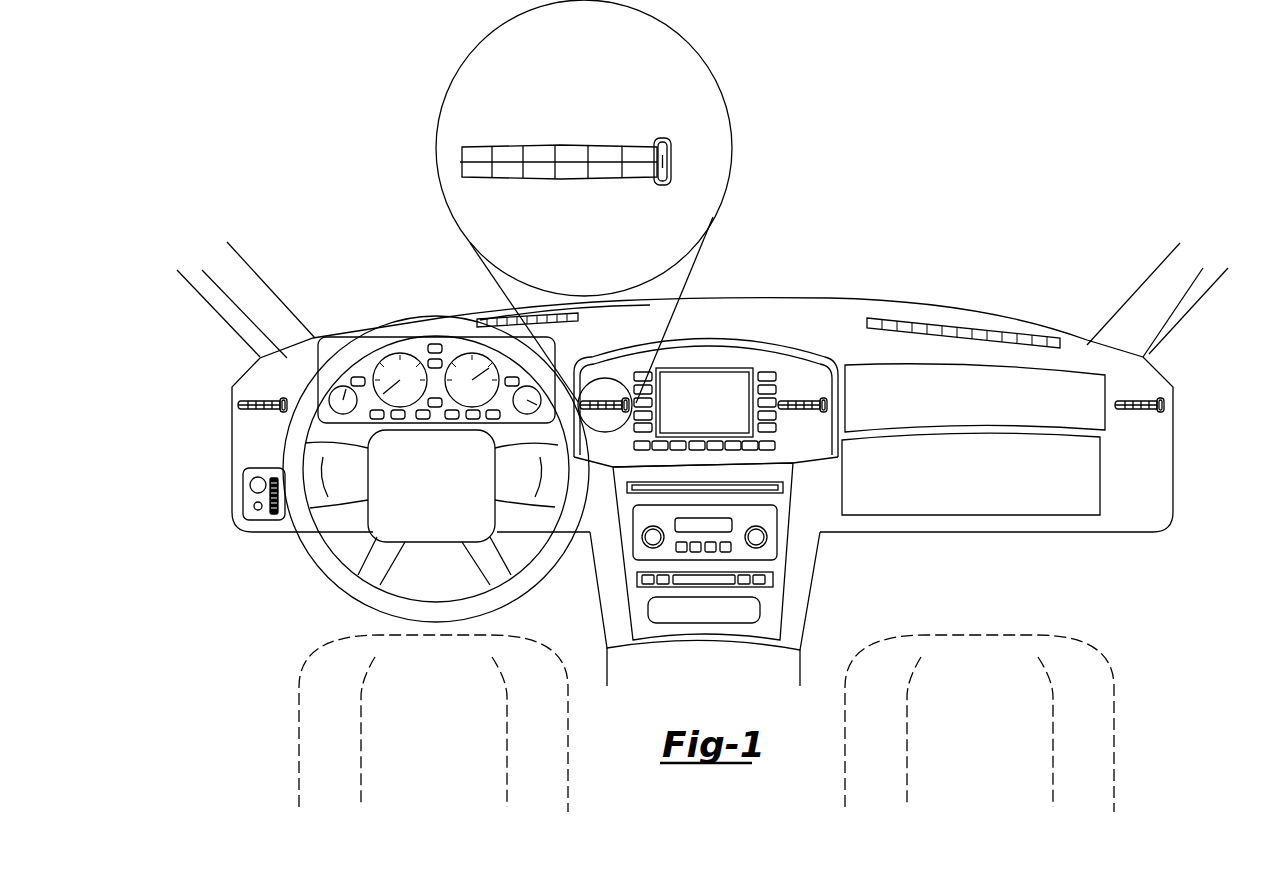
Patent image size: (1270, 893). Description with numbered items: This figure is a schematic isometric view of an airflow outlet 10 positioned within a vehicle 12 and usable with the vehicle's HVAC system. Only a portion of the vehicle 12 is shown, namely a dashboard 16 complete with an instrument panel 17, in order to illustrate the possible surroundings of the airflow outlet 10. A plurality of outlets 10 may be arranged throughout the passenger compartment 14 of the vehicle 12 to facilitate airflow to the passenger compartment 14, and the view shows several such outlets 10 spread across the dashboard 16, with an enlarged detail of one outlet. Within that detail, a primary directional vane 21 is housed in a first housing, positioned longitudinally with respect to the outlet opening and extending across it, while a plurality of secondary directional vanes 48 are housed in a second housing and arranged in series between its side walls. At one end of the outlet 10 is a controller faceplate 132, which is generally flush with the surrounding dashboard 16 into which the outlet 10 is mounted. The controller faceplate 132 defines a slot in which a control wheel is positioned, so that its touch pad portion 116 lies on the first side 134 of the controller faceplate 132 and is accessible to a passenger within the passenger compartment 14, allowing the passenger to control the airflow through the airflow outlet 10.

The airflow outlet 10 is at (248, 392).
The vehicle 12 is at (1022, 258).
The passenger compartment 14 is at (945, 578).
The dashboard 16 is at (797, 333).
The instrument panel 17 is at (697, 358).
The primary directional vane 21 is at (510, 160).
The secondary directional vanes 48 is at (528, 155).
The controller faceplate 132 is at (664, 140).
The first side 134 is at (672, 157).
The touch pad portion 116 is at (668, 174).